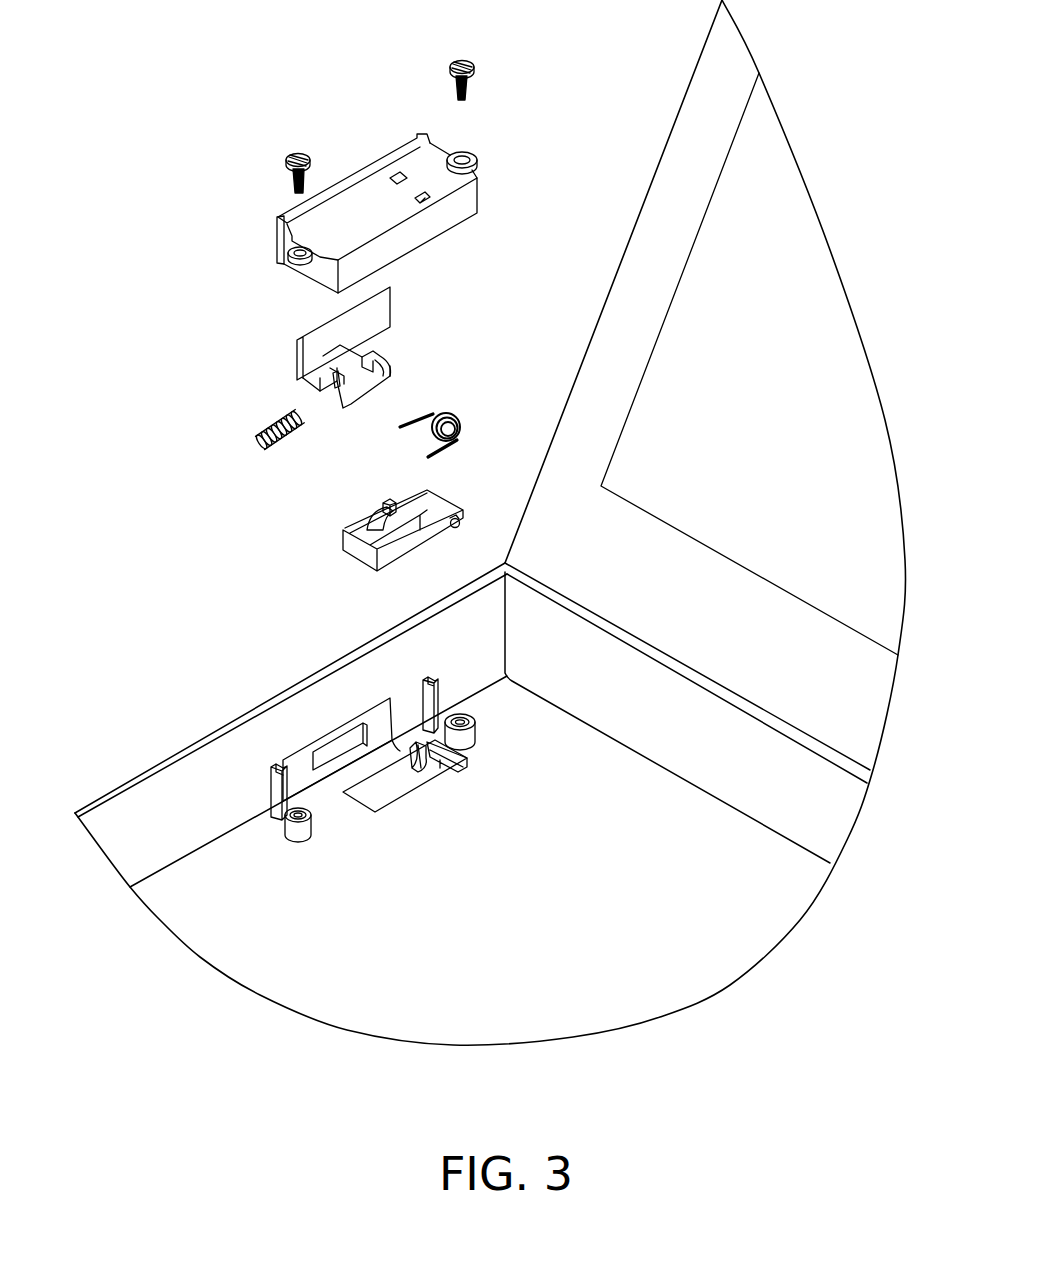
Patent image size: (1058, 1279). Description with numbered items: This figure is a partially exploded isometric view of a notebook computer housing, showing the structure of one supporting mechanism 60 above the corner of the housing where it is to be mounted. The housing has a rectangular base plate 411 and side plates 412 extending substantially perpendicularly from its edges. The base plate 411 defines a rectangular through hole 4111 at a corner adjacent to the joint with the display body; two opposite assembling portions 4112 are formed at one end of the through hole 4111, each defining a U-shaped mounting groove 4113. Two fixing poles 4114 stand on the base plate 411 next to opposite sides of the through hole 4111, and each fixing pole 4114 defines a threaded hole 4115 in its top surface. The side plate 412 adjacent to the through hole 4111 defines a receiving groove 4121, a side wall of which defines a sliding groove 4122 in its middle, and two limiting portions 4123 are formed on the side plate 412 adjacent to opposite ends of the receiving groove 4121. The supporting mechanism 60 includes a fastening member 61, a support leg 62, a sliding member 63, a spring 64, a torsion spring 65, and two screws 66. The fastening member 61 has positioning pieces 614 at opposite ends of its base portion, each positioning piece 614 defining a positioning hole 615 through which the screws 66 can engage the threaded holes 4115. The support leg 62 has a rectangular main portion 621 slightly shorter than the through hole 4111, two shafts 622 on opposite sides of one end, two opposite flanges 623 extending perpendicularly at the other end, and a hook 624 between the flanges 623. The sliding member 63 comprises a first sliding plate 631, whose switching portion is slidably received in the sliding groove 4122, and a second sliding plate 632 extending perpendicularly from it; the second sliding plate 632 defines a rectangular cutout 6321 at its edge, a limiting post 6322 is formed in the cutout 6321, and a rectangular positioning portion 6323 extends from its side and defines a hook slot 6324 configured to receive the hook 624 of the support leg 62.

The supporting mechanism 60 is at (323, 61).
The fastening member 61 is at (359, 216).
The positioning piece 614 is at (297, 268).
The positioning hole 615 is at (280, 238).
The support leg 62 is at (338, 520).
The main portion 621 is at (361, 544).
The shaft 622 is at (458, 522).
The flange 623 is at (368, 527).
The hook 624 is at (383, 507).
The sliding member 63 is at (288, 347).
The first sliding plate 631 is at (384, 317).
The second sliding plate 632 is at (347, 373).
The cutout 6321 is at (332, 394).
The limiting post 6322 is at (337, 372).
The positioning portion 6323 is at (381, 380).
The hook slot 6324 is at (378, 362).
The spring 64 is at (256, 428).
The torsion spring 65 is at (461, 420).
The screw 66 is at (474, 83).
The base plate 411 is at (490, 552).
The through hole 4111 is at (385, 797).
The assembling portion 4112 is at (413, 760).
The mounting groove 4113 is at (443, 777).
The fixing pole 4114 is at (302, 840).
The threaded hole 4115 is at (282, 822).
The side plate 412 is at (288, 772).
The receiving groove 4121 is at (380, 717).
The sliding groove 4122 is at (338, 745).
The limiting portion 4123 is at (430, 682).